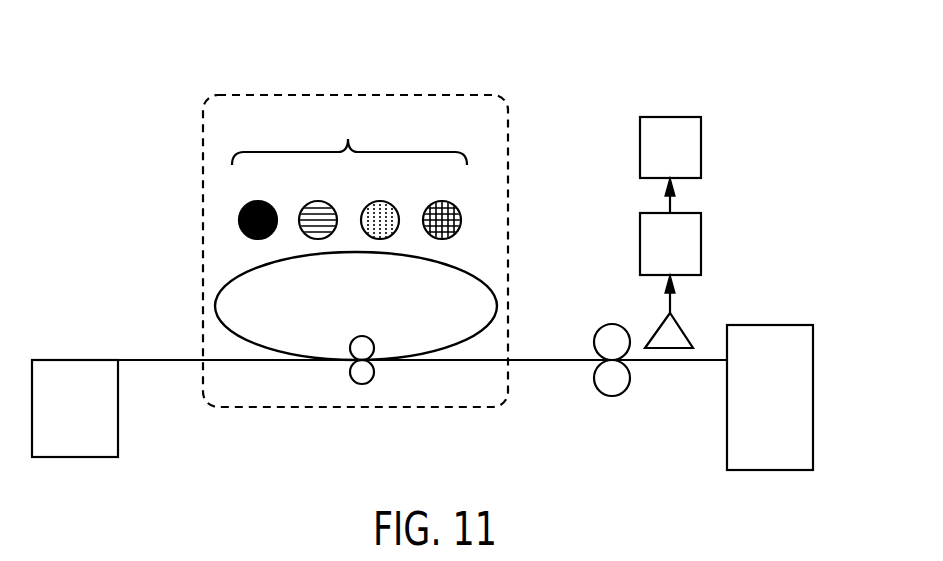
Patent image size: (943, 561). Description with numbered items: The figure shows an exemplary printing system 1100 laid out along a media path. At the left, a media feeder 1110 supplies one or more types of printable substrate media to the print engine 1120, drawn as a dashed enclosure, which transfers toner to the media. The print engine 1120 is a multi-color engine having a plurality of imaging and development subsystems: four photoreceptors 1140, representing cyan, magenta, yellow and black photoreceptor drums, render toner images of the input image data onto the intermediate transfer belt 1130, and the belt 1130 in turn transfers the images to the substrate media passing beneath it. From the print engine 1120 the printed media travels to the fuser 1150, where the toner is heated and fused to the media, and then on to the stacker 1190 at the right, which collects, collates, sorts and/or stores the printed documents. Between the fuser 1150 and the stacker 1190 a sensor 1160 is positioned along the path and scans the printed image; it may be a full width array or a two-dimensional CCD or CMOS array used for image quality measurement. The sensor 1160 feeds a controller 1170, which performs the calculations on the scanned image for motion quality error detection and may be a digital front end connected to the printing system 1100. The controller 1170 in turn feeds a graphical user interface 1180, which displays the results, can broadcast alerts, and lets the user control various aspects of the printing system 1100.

The printing system 1100 is at (155, 164).
The media feeder 1110 is at (77, 360).
The print engine 1120 is at (462, 93).
The intermediate transfer belt 1130 is at (216, 303).
The photoreceptors 1140 is at (349, 175).
The fuser 1150 is at (630, 380).
The sensor 1160 is at (658, 330).
The controller 1170 is at (640, 248).
The graphical user interface 1180 is at (640, 143).
The stacker 1190 is at (727, 447).